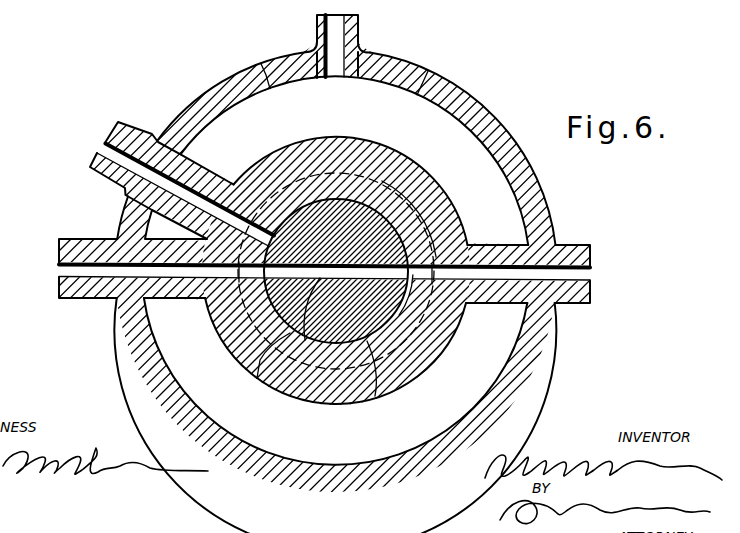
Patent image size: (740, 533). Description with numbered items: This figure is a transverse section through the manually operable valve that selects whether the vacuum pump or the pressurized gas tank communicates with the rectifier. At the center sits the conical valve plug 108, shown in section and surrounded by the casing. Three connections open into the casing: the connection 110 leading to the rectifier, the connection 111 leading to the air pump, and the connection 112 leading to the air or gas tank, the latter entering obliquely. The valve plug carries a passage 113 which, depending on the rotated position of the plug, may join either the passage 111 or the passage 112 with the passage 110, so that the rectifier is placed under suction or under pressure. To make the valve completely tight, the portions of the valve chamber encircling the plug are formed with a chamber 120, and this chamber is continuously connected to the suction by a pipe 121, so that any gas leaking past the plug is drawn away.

The conical valve plug 108 is at (375, 396).
The connection to the rectifier 110 is at (584, 250).
The connection to the air pump 111 is at (57, 270).
The connection to the air or gas tank 112 is at (105, 146).
The passage 113 is at (257, 378).
The chamber 120 is at (414, 141).
The pipe 121 is at (352, 39).